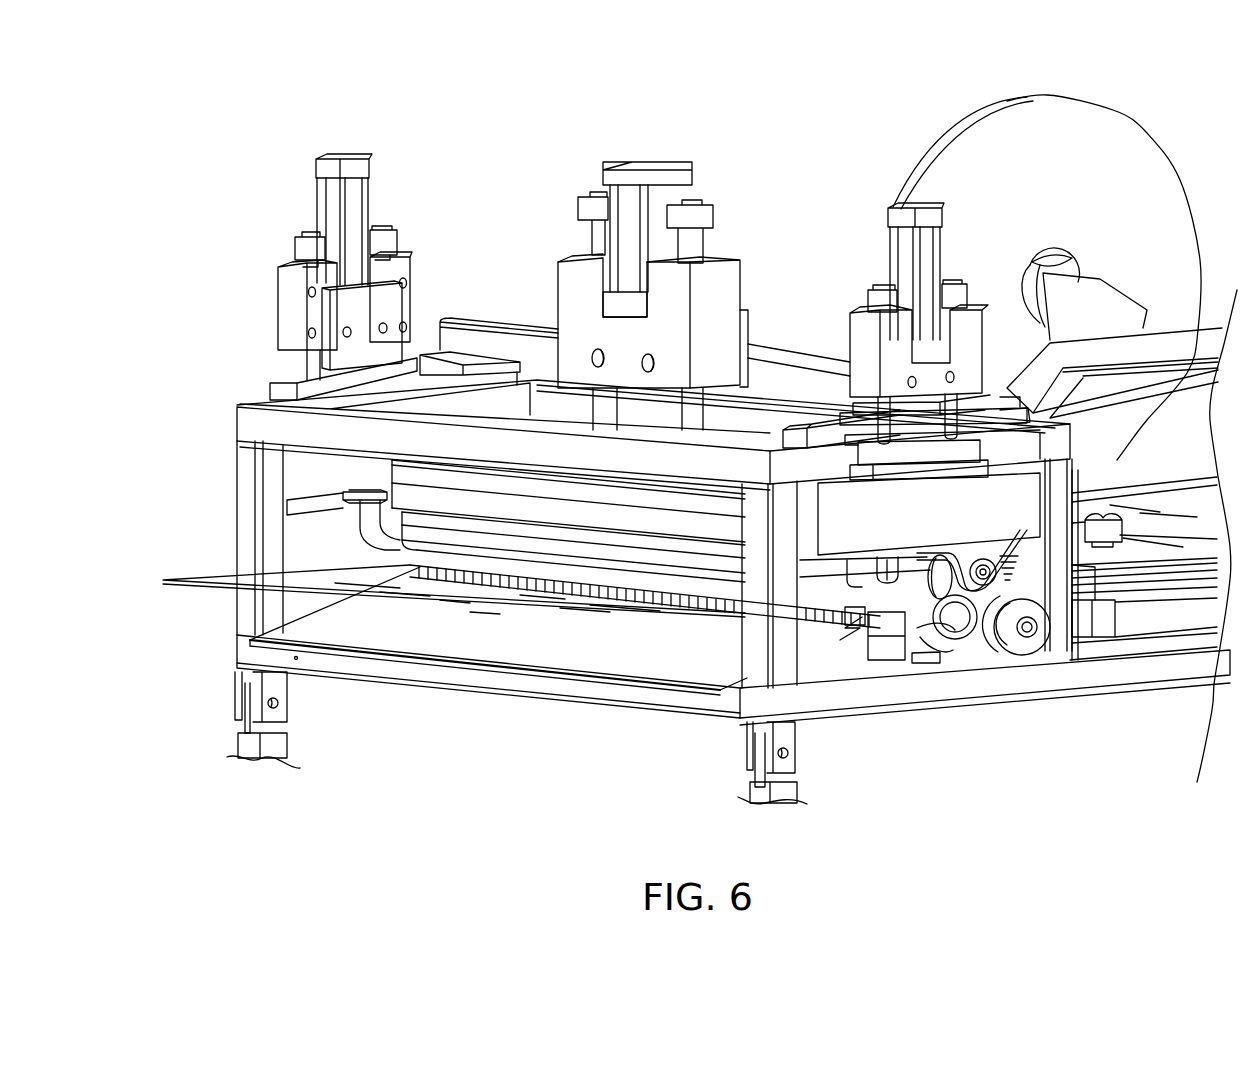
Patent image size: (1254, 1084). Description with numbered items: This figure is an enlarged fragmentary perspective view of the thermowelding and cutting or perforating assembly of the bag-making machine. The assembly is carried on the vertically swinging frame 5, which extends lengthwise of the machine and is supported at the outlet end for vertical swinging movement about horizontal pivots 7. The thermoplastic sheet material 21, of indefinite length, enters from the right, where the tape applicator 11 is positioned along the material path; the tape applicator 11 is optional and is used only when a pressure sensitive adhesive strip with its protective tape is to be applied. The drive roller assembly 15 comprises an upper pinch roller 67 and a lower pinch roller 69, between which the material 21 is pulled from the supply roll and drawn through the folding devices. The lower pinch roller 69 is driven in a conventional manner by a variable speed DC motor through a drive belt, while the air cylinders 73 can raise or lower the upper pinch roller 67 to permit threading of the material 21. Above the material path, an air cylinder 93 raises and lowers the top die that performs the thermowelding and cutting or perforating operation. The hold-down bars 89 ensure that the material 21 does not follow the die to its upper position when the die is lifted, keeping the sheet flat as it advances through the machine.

The vertically swinging frame 5 is at (1120, 680).
The horizontal pivots 7 is at (282, 703).
The tape applicator 11 is at (962, 180).
The drive roller assembly 15 is at (1025, 645).
The thermoplastic sheet material 21 is at (1133, 512).
The upper pinch roller 67 is at (970, 540).
The lower pinch roller 69 is at (917, 627).
The air cylinders 73 is at (315, 162).
The hold-down bars 89 is at (352, 493).
The air cylinder 93 is at (603, 189).